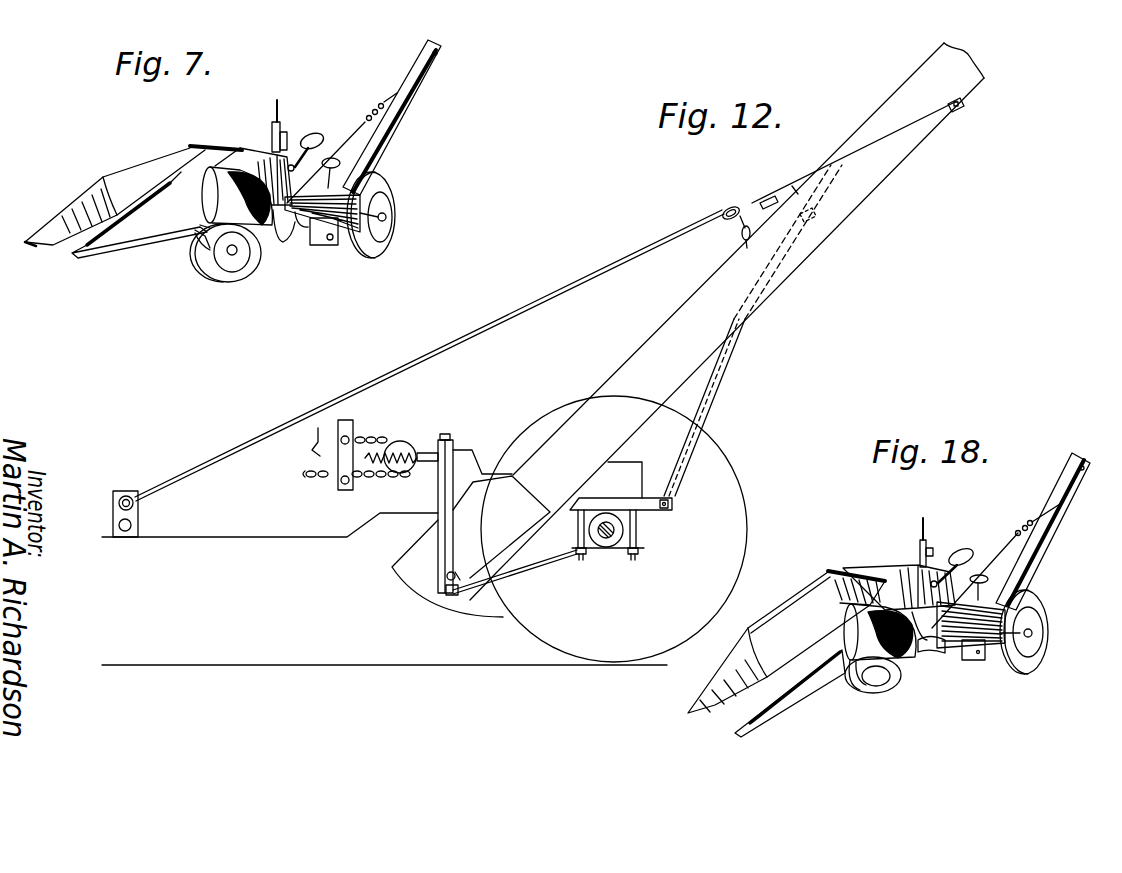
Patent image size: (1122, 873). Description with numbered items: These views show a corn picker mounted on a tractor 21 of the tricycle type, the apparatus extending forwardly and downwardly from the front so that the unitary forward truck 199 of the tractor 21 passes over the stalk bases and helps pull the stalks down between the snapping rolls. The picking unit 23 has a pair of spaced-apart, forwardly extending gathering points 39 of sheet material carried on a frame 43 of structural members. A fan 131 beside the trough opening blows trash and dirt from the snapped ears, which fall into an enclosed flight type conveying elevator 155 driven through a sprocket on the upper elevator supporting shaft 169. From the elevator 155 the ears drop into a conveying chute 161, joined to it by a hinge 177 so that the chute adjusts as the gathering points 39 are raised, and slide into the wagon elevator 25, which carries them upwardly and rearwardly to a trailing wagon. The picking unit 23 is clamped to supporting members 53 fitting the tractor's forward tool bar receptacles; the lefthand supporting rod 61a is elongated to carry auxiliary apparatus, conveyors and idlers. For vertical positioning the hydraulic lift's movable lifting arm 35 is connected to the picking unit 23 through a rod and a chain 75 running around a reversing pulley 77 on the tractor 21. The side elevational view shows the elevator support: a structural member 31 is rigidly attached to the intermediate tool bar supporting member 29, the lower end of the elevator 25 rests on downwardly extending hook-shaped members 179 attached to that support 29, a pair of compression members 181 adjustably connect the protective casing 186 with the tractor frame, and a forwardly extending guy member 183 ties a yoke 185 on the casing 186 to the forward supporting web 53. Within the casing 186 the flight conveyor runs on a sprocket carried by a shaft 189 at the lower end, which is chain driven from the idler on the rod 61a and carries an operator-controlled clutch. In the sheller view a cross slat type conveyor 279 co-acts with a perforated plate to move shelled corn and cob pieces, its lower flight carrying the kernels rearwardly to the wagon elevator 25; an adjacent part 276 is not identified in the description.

In FIG. 7, the tractor 21 is at (253, 143).
In FIG. 18, the tractor 21 is at (900, 556).
In FIG. 7, the picking unit 23 is at (152, 160).
In FIG. 18, the picking unit 23 is at (770, 608).
In FIG. 7, the wagon elevator 25 is at (410, 129).
In FIG. 12, the wagon elevator 25 is at (724, 318).
In FIG. 18, the wagon elevator 25 is at (1048, 548).
In FIG. 12, the intermediate tool bar supporting member 29 is at (426, 465).
In FIG. 12, the structural member 31 is at (443, 440).
In FIG. 12, the lifting arm 35 is at (353, 425).
In FIG. 7, the gathering points 39 is at (106, 178).
In FIG. 18, the gathering points 39 is at (728, 703).
In FIG. 7, the frame 43 is at (148, 243).
In FIG. 18, the frame 43 is at (807, 695).
In FIG. 12, the supporting members 53 is at (102, 509).
In FIG. 7, the supporting rod 61a is at (283, 228).
In FIG. 12, the supporting rod 61a is at (129, 497).
In FIG. 18, the supporting rod 61a is at (927, 640).
In FIG. 12, the chain 75 is at (398, 441).
In FIG. 12, the reversing pulley 77 is at (398, 474).
In FIG. 7, the fan 131 is at (253, 272).
In FIG. 18, the fan 131 is at (905, 677).
In FIG. 7, the conveying elevator 155 is at (283, 148).
In FIG. 18, the conveying elevator 155 is at (895, 590).
In FIG. 7, the conveying chute 161 is at (382, 173).
In FIG. 7, the upper elevator supporting shaft 169 is at (312, 134).
In FIG. 18, the upper elevator supporting shaft 169 is at (932, 587).
In FIG. 7, the hinge 177 is at (305, 235).
In FIG. 12, the hook-shaped members 179 is at (447, 557).
In FIG. 12, the compression members 181 is at (750, 340).
In FIG. 7, the guy member 183 is at (353, 128).
In FIG. 12, the guy member 183 is at (564, 286).
In FIG. 18, the guy member 183 is at (1000, 553).
In FIG. 12, the yoke 185 is at (806, 166).
In FIG. 18, the yoke 185 is at (1062, 505).
In FIG. 12, the protective casing 186 is at (879, 181).
In FIG. 12, the lower elevator shaft 189 is at (451, 597).
In FIG. 7, the forward truck 199 is at (217, 277).
In FIG. 18, the forward truck 199 is at (880, 692).
In FIG. 18, the bracket 276 is at (972, 655).
In FIG. 18, the cross slat conveyor 279 is at (938, 648).